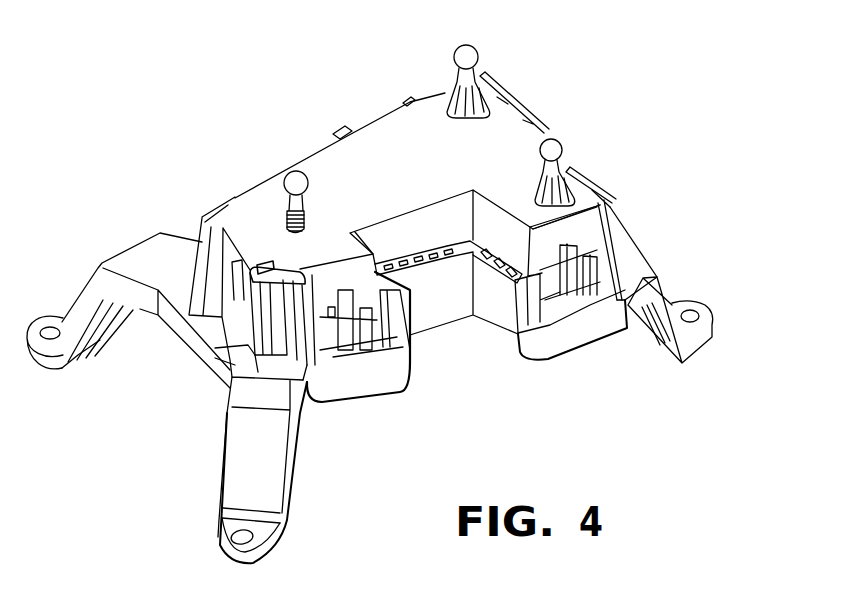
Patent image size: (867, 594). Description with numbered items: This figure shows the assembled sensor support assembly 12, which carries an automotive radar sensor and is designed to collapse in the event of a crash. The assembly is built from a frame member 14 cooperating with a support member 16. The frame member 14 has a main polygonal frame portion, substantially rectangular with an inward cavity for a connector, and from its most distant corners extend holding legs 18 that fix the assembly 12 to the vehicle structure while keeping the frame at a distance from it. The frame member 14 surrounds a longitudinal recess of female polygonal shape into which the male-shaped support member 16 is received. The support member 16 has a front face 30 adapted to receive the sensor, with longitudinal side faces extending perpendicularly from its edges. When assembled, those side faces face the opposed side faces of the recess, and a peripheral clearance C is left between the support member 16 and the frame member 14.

The sensor support assembly 12 is at (386, 284).
The frame member 14 is at (380, 377).
The support member 16 is at (342, 263).
The holding legs 18 is at (243, 437).
The front face 30 is at (400, 133).
The peripheral clearance C is at (622, 197).